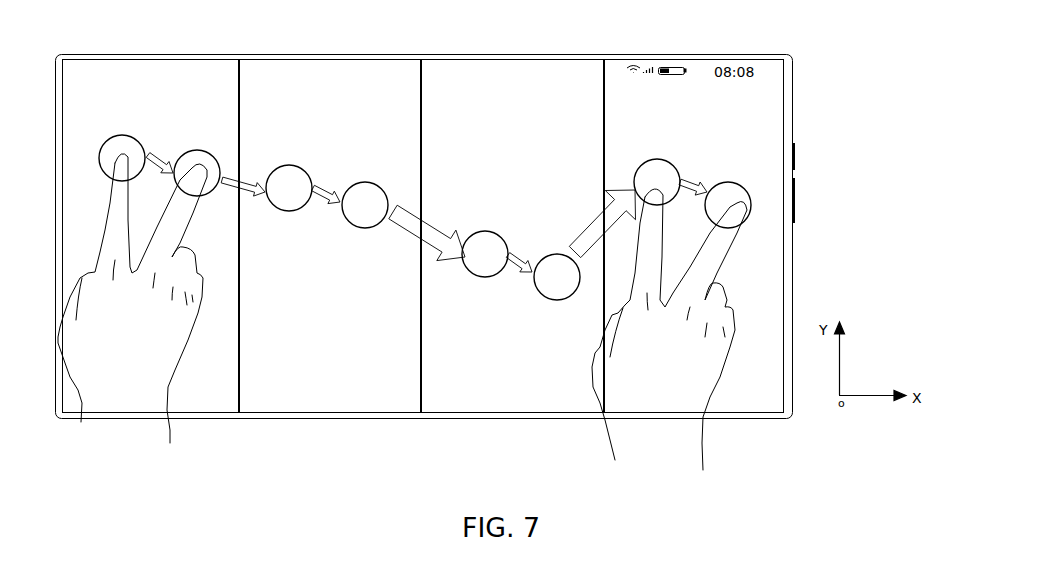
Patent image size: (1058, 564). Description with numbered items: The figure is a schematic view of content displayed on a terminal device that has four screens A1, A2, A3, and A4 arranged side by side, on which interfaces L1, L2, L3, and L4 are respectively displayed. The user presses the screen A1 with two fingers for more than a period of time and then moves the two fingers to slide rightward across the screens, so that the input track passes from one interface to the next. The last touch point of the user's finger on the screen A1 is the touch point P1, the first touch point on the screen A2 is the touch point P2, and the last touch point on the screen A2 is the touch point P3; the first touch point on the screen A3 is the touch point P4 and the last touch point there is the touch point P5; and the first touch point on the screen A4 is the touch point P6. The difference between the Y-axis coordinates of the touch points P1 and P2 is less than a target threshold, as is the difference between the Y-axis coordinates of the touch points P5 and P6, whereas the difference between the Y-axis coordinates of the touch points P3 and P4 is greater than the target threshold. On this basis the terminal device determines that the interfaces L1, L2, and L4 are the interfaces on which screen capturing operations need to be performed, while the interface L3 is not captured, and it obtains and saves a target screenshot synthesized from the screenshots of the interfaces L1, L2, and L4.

The screen A1 is at (157, 53).
The screen A2 is at (318, 53).
The screen A3 is at (484, 53).
The screen A4 is at (675, 53).
The touch point P1 is at (193, 158).
The touch point P2 is at (290, 177).
The touch point P3 is at (362, 193).
The touch point P4 is at (470, 240).
The touch point P5 is at (562, 285).
The touch point P6 is at (648, 165).
The interface L1 is at (202, 192).
The interface L2 is at (388, 222).
The interface L3 is at (570, 231).
The interface L4 is at (693, 205).